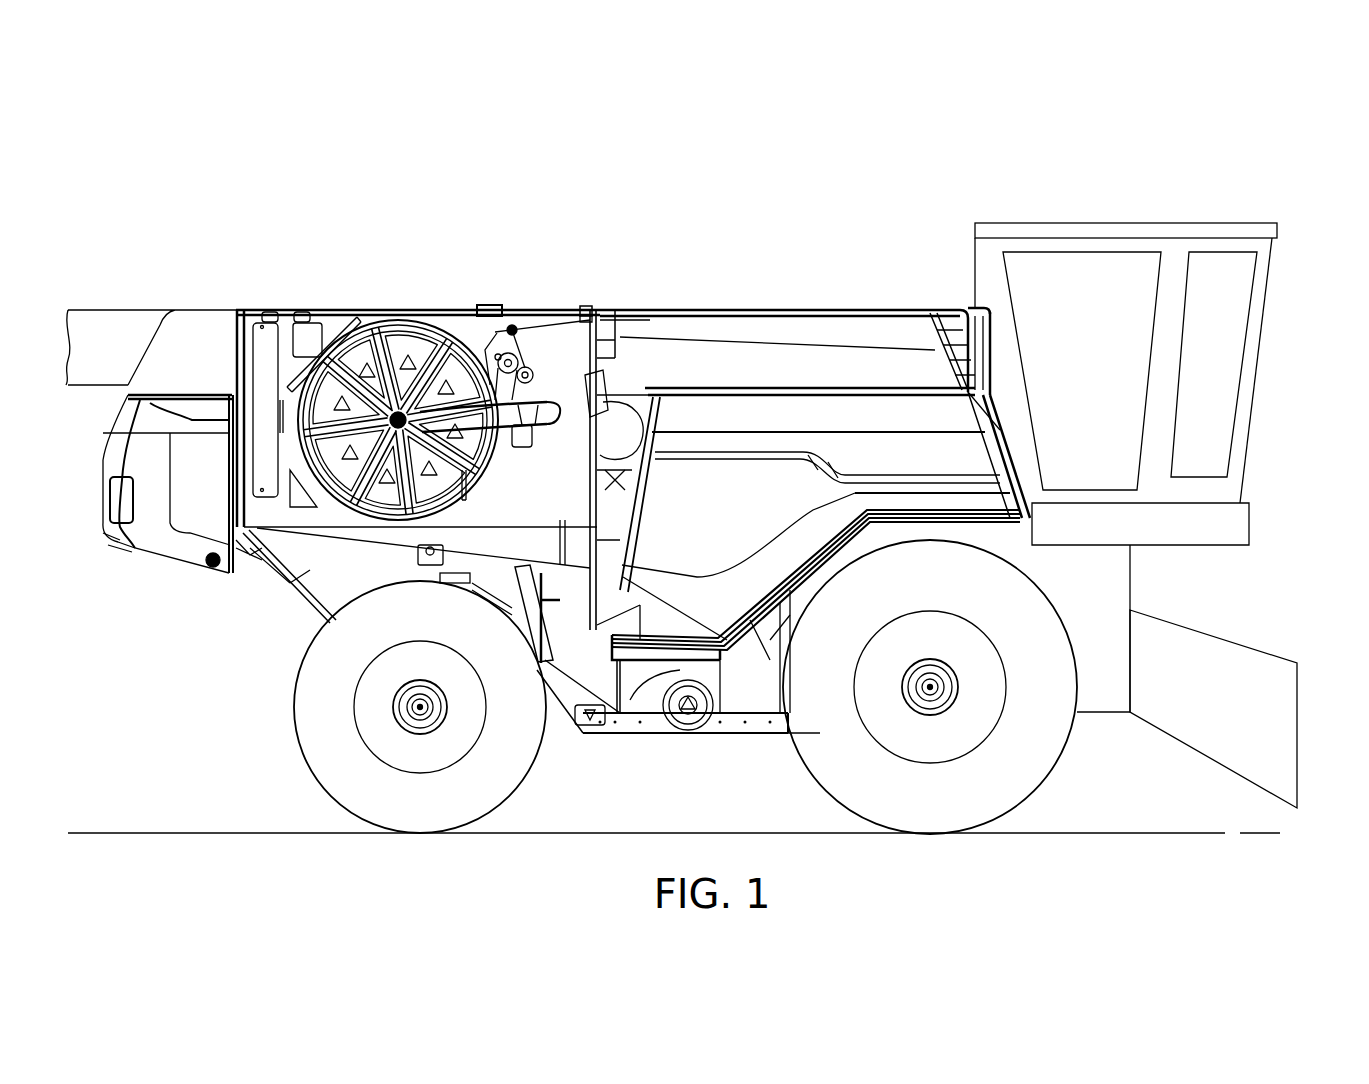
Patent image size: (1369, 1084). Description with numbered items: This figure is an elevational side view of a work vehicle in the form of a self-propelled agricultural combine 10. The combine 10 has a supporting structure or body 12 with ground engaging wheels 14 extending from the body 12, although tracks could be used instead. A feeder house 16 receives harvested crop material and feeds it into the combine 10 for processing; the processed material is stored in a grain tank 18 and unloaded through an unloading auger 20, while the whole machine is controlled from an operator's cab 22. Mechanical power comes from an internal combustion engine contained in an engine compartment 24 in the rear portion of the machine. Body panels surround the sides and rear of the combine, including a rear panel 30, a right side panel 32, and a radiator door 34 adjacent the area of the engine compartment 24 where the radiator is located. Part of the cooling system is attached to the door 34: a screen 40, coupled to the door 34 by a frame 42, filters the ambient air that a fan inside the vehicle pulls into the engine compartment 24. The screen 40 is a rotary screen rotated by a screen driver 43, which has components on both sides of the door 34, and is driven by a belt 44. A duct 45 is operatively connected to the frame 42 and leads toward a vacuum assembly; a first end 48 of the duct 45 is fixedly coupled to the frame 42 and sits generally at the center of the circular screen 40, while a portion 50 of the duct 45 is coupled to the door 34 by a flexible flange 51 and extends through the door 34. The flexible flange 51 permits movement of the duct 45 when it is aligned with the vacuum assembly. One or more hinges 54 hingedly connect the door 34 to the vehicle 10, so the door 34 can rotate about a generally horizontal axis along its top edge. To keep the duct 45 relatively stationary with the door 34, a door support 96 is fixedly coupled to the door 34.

The agricultural combine 10 is at (1118, 165).
The body 12 is at (658, 725).
The ground engaging wheels 14 is at (415, 830).
The feeder house 16 is at (1275, 715).
The grain tank 18 is at (790, 335).
The unloading auger 20 is at (105, 338).
The operator's cab 22 is at (1232, 345).
The engine compartment 24 is at (410, 298).
The rear panel 30 is at (222, 585).
The right side panel 32 is at (687, 514).
The radiator door 34 is at (583, 348).
The screen 40 is at (368, 343).
The frame 42 is at (332, 365).
The screen driver 43 is at (522, 320).
The belt 44 is at (540, 345).
The duct 45 is at (478, 425).
The first end 48 is at (398, 420).
The portion 50 is at (562, 416).
The flexible flange 51 is at (570, 412).
The hinges 54 is at (492, 305).
The door support 96 is at (527, 450).